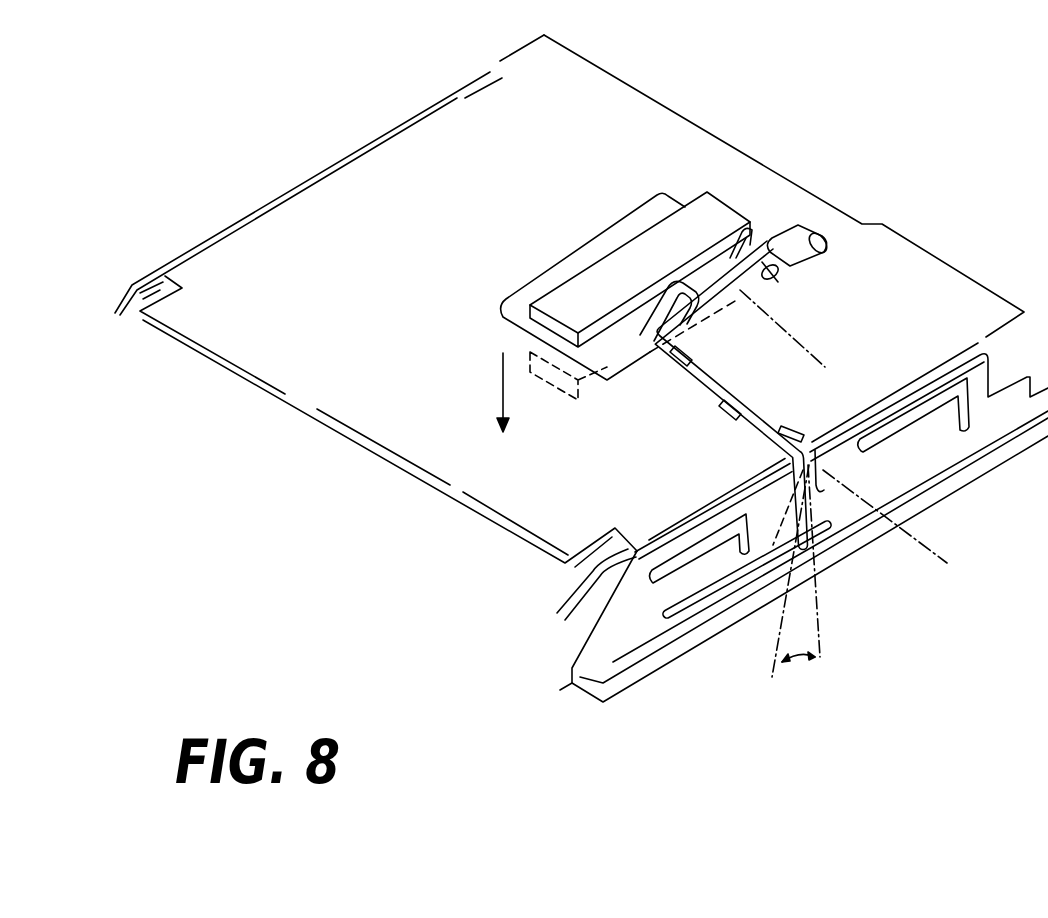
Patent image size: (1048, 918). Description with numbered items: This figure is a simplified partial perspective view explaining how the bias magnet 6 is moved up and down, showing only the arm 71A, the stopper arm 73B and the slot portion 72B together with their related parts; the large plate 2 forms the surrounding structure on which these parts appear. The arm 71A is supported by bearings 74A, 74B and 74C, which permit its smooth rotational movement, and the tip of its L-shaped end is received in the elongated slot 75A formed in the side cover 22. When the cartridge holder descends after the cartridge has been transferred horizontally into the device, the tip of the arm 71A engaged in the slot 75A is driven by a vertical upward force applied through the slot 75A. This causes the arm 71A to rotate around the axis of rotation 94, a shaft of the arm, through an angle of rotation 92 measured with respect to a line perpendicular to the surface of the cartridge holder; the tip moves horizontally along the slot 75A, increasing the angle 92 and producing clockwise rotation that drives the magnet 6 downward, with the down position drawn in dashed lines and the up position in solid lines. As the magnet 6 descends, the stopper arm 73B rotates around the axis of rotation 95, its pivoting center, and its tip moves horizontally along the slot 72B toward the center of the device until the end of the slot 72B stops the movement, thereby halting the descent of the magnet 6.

The base plate 2 is at (562, 137).
The magnet 6 is at (657, 269).
The side cover 22 is at (602, 637).
The arm 71A is at (700, 386).
The slot portion 72B is at (824, 230).
The stopper arm 73B is at (763, 287).
The bearing 74A is at (700, 357).
The bearing 74B is at (728, 418).
The bearing 74C is at (806, 428).
The elongated slot 75A is at (683, 620).
The angle of rotation 92 is at (787, 664).
The axis of rotation 94 is at (933, 553).
The axis of rotation 95 is at (812, 350).